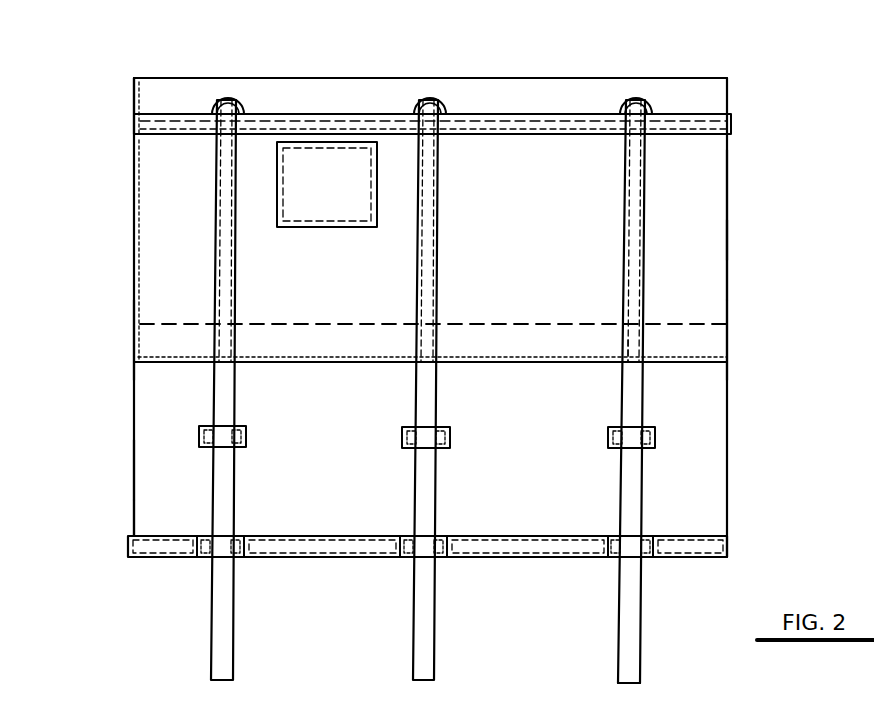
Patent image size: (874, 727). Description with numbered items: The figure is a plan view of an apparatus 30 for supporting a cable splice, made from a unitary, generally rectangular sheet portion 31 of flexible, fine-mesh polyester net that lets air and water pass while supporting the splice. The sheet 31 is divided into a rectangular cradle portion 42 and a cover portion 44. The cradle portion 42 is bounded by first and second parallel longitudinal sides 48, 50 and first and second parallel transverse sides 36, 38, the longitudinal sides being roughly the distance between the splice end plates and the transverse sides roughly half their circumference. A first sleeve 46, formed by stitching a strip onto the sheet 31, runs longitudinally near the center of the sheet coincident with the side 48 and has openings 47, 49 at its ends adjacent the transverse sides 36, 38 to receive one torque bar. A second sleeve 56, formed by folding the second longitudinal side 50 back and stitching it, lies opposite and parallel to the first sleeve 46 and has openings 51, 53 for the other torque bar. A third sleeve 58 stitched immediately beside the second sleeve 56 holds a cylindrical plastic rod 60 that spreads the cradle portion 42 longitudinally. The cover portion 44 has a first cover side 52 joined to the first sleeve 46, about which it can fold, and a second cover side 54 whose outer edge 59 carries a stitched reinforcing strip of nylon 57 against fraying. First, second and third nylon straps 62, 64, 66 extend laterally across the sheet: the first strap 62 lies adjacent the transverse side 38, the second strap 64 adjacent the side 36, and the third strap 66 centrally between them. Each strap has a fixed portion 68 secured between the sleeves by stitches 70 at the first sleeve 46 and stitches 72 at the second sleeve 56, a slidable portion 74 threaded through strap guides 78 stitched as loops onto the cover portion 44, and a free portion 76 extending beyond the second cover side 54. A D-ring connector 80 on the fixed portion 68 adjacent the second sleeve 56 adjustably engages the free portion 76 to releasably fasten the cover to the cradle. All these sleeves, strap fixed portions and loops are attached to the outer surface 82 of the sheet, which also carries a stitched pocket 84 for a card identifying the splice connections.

The apparatus 30 is at (768, 73).
The sheet portion 31 is at (732, 210).
The first transverse side 36 is at (132, 232).
The second transverse side 38 is at (732, 240).
The cradle portion 42 is at (686, 262).
The cover portion 44 is at (175, 468).
The first sleeve 46 is at (305, 342).
The first opening 47 is at (132, 340).
The first longitudinal side 48 is at (340, 322).
The first opening 49 is at (732, 351).
The second longitudinal side 50 is at (526, 78).
The second opening 51 is at (133, 100).
The first cover side 52 is at (182, 366).
The second opening 53 is at (732, 101).
The second cover side 54 is at (160, 527).
The second sleeve 56 is at (353, 97).
The narrow strip of nylon 57 is at (522, 545).
The third sleeve 58 is at (521, 136).
The outer edge 59 is at (498, 560).
The cylindrical plastic rod 60 is at (578, 136).
The first strap 62 is at (642, 392).
The second strap 64 is at (222, 262).
The third strap 66 is at (426, 290).
The fixed portion 68 is at (646, 236).
The stitches 70 is at (636, 364).
The stitches 72 is at (250, 114).
The slidable portion 74 is at (632, 470).
The free portion 76 is at (628, 668).
The strap guides 78 is at (658, 439).
The D-ring connector 80 is at (236, 92).
The outer surface 82 is at (551, 254).
The pocket 84 is at (361, 208).